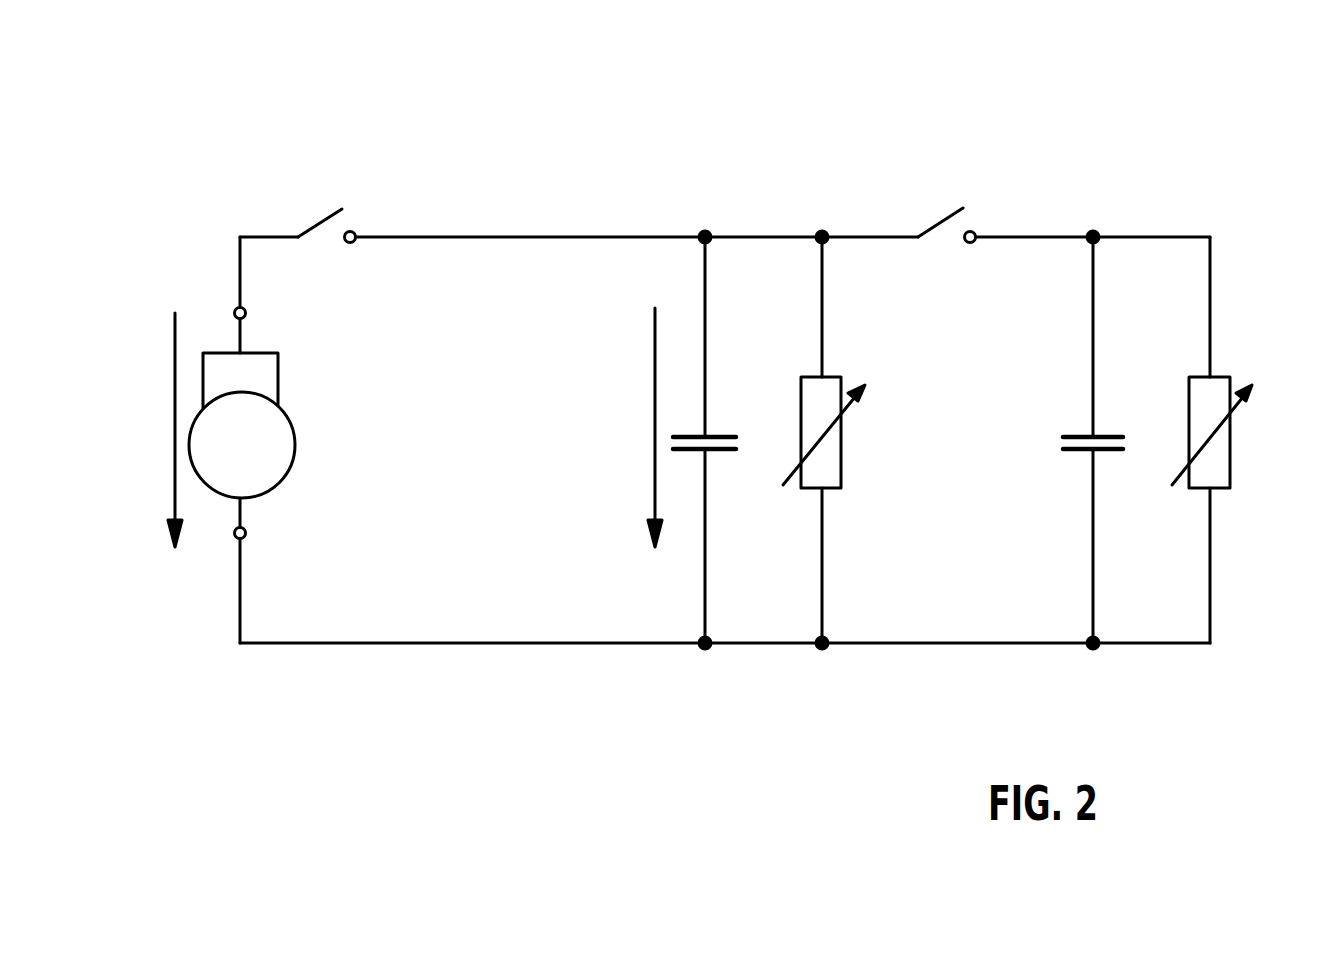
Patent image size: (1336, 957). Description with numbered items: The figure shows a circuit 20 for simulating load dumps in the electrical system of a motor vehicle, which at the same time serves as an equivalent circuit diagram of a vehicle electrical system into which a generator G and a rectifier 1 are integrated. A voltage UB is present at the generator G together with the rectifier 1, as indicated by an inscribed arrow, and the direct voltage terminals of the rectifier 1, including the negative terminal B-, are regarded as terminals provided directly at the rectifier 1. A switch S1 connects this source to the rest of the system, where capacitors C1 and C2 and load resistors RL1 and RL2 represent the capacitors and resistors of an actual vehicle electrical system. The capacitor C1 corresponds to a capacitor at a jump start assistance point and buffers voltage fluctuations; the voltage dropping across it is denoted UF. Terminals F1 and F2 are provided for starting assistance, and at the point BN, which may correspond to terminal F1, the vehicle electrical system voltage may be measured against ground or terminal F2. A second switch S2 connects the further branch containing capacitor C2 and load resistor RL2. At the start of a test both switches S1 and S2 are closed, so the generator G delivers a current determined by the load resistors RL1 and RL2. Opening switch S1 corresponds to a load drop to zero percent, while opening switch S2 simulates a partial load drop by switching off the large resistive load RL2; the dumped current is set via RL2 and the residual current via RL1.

The rectifier 1 is at (278, 373).
The circuit 20 is at (1063, 188).
The switch S1 is at (327, 206).
The switch S2 is at (947, 207).
The capacitor C1 is at (710, 440).
The capacitor C2 is at (1100, 440).
The load resistor RL1 is at (844, 440).
The load resistor RL2 is at (1233, 435).
The terminal F1 is at (705, 237).
The terminal F2 is at (705, 643).
The voltage UB is at (156, 430).
The voltage UF is at (633, 427).
The direct voltage terminal B- is at (261, 535).